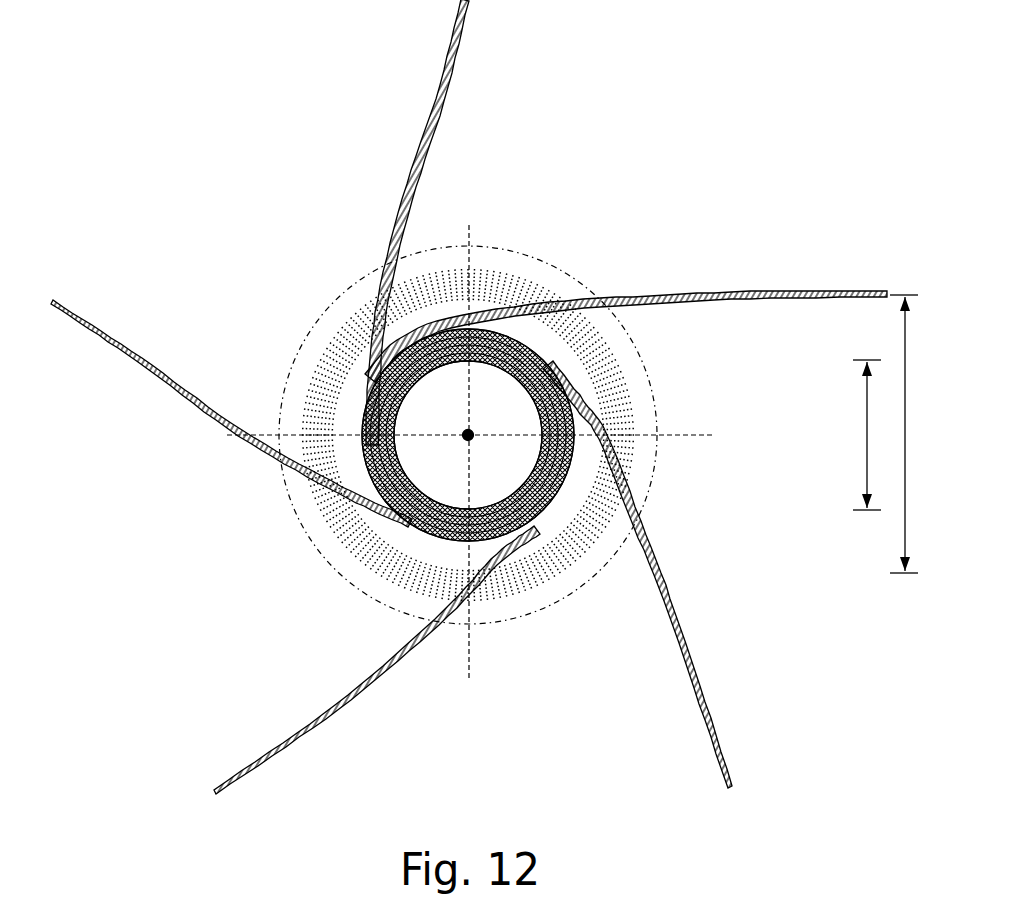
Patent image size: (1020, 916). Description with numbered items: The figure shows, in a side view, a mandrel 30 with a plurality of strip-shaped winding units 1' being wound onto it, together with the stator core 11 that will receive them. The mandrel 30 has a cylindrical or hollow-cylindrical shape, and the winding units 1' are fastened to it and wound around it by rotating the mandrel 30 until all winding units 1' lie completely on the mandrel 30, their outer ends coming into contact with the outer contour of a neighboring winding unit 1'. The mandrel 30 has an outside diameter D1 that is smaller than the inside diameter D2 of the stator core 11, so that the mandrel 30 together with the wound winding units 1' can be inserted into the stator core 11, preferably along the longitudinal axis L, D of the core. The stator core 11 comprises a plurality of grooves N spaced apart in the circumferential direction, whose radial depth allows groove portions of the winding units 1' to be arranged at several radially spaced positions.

The strip-shaped winding unit 1' is at (469, 397).
The mandrel 30 is at (442, 412).
The stator core 11 is at (357, 570).
The groove N is at (532, 570).
The longitudinal axis / center L, D is at (468, 435).
The outside diameter D1 is at (867, 458).
The inside diameter D2 is at (905, 460).